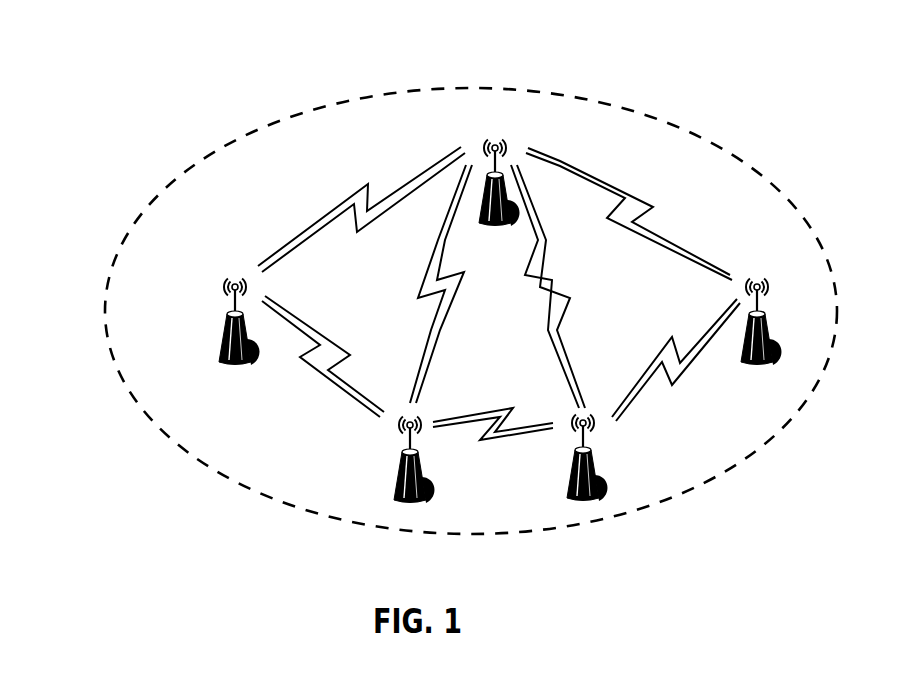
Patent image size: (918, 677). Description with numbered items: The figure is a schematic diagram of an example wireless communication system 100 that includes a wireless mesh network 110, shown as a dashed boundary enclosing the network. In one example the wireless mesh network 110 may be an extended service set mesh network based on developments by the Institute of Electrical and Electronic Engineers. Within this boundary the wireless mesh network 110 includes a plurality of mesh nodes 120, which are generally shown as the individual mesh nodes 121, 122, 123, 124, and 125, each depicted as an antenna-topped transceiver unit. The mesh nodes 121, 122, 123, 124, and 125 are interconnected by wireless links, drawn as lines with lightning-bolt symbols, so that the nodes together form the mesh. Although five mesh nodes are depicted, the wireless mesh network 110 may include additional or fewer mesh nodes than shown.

The wireless communication system 100 is at (431, 271).
The wireless mesh network 110 is at (470, 85).
The mesh nodes 120 is at (456, 293).
The mesh node 121 is at (201, 322).
The mesh node 122 is at (377, 460).
The mesh node 123 is at (550, 458).
The mesh node 124 is at (730, 343).
The mesh node 125 is at (456, 168).